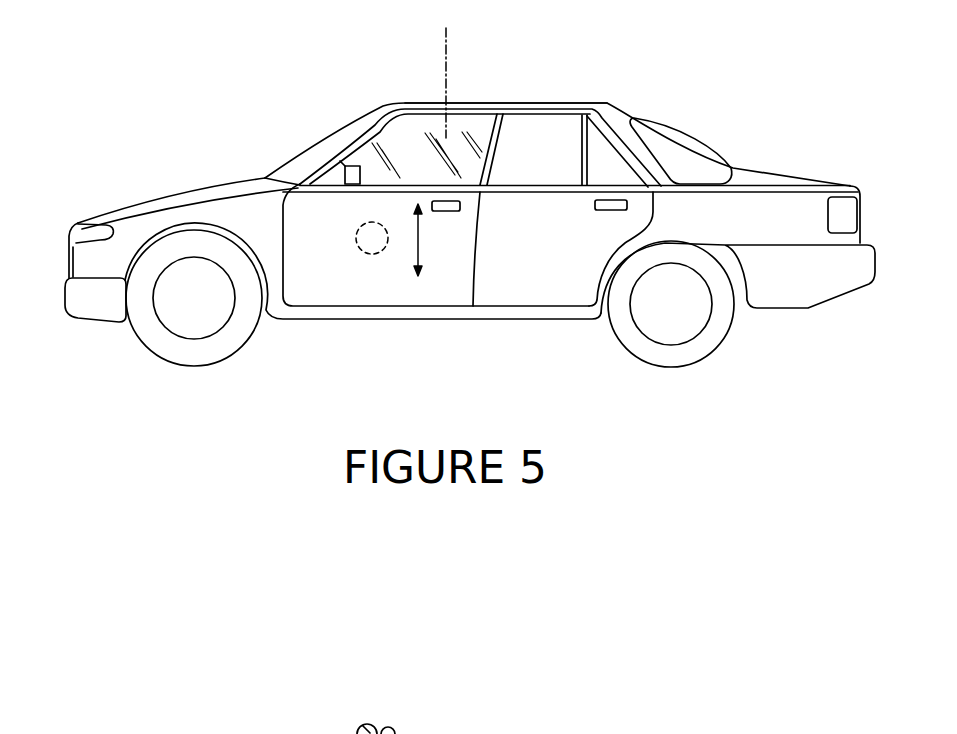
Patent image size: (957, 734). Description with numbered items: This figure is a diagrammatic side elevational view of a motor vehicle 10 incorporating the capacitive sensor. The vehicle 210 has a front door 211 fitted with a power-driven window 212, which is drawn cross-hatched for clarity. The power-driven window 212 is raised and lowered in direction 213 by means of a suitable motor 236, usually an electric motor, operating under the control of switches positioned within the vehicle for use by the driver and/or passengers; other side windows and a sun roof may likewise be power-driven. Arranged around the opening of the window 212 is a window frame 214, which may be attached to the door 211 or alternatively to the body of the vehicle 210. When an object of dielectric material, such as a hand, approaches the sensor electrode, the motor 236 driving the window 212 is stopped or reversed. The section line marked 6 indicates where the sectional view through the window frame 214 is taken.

The section line 6- 6 is at (438, 126).
The vehicle 10 is at (483, 115).
The roof 210 is at (604, 102).
The door 211 is at (372, 283).
The window glass 212 is at (378, 146).
The window movement direction 213 is at (418, 237).
The window frame 214 is at (472, 114).
The motor 236 is at (357, 235).